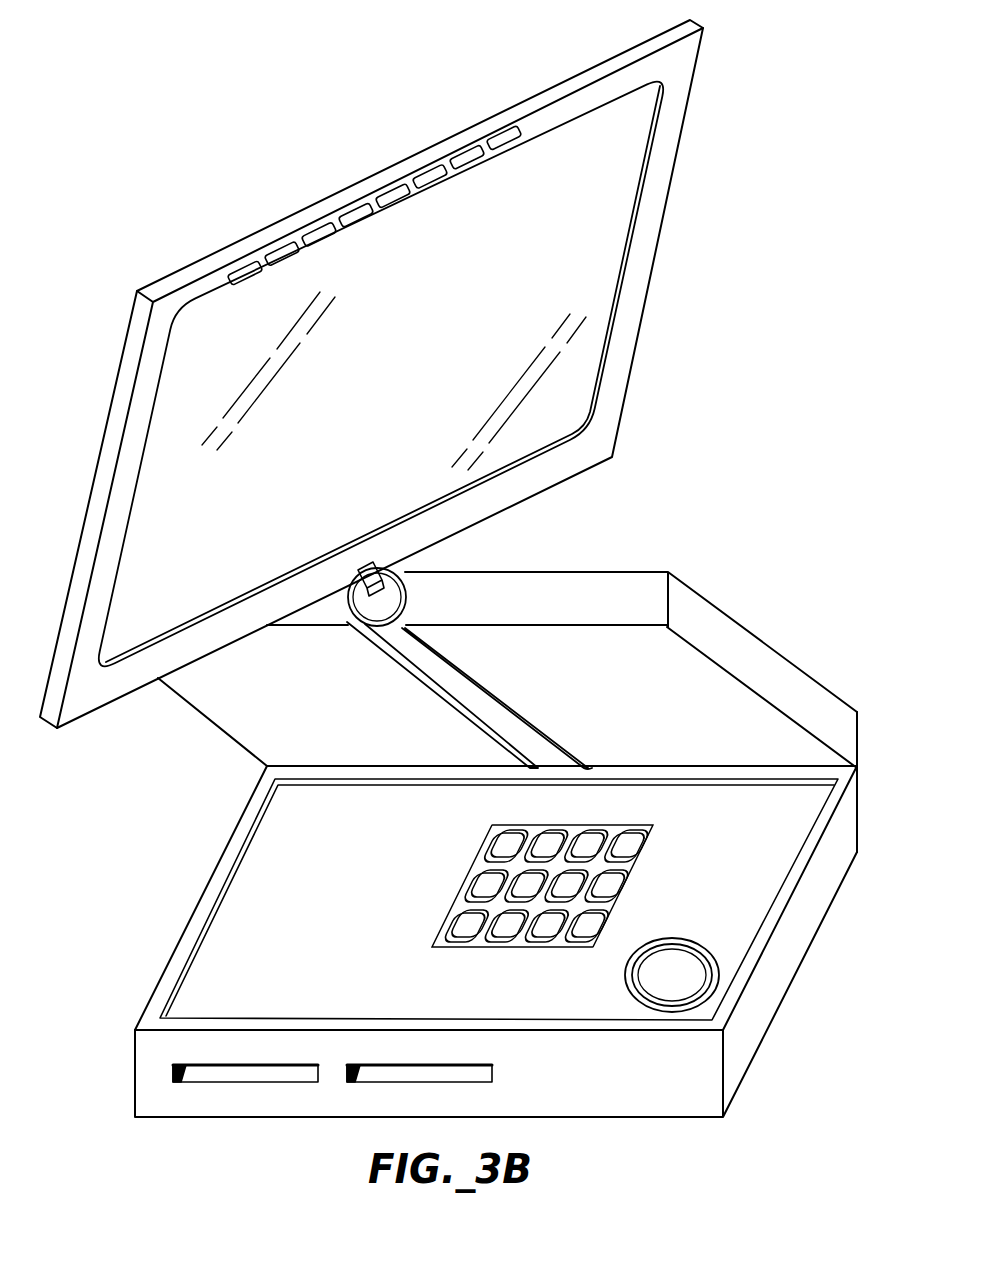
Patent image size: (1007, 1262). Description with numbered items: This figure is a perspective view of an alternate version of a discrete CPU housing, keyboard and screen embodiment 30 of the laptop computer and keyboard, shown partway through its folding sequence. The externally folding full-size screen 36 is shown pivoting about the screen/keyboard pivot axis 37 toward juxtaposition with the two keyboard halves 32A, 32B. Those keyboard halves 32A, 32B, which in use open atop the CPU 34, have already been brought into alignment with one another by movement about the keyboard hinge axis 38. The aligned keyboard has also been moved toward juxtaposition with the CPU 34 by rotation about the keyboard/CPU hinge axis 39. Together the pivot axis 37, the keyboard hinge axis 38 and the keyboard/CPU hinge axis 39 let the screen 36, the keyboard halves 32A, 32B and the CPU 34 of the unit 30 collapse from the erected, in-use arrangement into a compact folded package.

The discrete CPU housing+keyboard+screen embodiment 30 is at (464, 568).
The keyboard half 32A is at (198, 702).
The keyboard half 32B is at (808, 713).
The CPU 34 is at (750, 1027).
The externally folding full-size screen 36 is at (478, 133).
The screen/keyboard pivot axis 37 is at (387, 590).
The keyboard hinge axis 38 is at (482, 698).
The keyboard/CPU hinge axis 39 is at (857, 770).